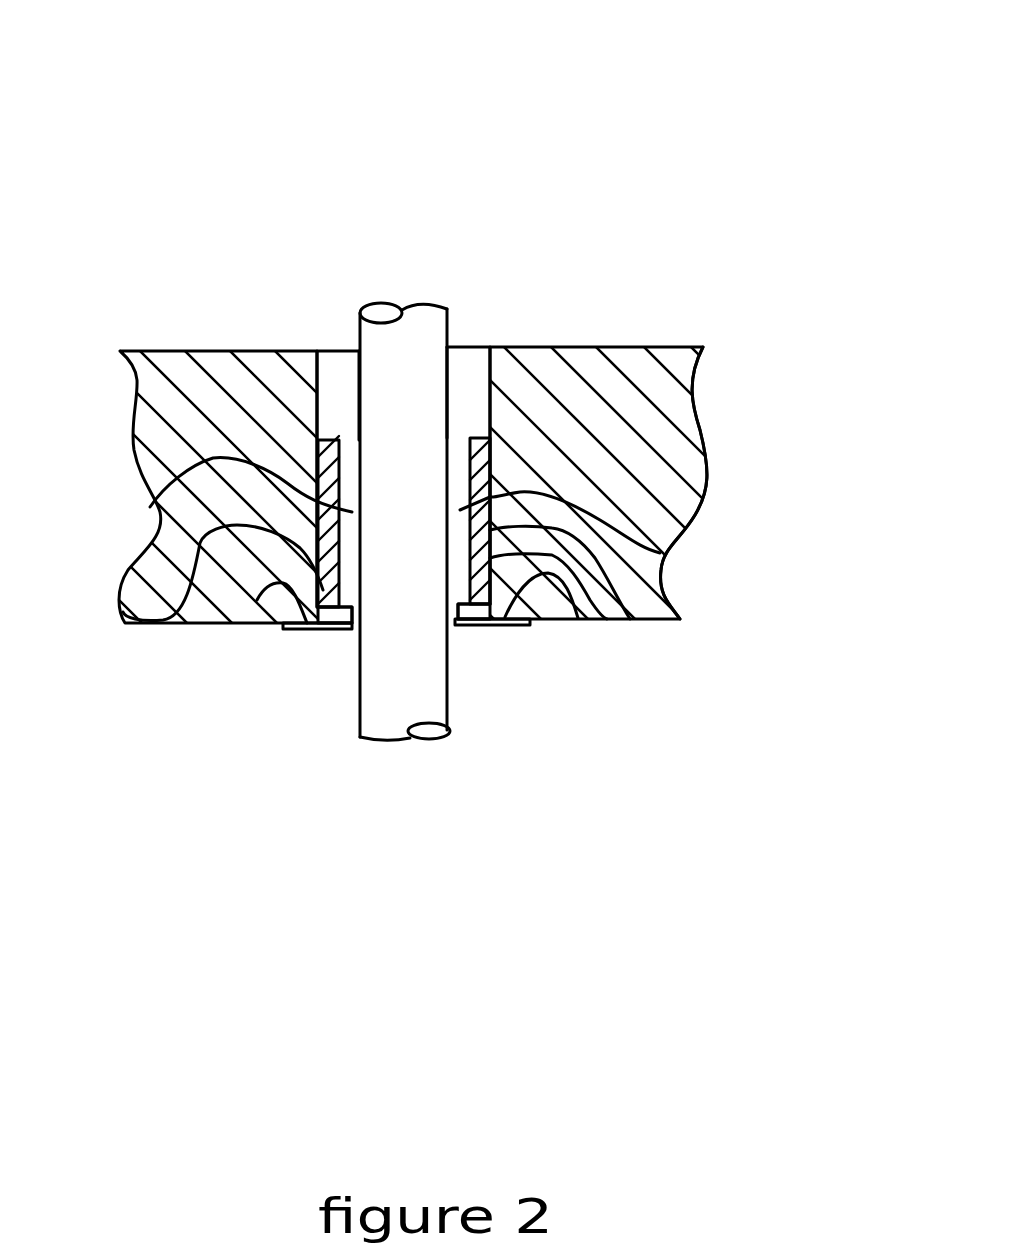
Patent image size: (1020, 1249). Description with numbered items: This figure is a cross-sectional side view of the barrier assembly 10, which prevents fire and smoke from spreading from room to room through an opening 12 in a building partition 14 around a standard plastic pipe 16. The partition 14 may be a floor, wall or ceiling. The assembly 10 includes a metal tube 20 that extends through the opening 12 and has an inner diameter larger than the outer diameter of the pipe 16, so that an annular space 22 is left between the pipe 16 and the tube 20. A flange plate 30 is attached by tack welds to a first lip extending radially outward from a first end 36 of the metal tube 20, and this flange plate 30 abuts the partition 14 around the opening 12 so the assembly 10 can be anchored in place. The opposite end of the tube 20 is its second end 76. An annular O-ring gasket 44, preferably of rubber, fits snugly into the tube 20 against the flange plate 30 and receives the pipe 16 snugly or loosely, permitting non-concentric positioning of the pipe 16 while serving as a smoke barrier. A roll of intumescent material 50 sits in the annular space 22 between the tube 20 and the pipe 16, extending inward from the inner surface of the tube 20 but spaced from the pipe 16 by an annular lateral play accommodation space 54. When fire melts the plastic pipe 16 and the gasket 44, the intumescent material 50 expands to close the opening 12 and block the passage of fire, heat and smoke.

The barrier assembly 10 is at (672, 152).
The opening 12 is at (338, 362).
The building partition 14 is at (172, 351).
The plastic pipe 16 is at (380, 694).
The metal tube 20 is at (490, 373).
The annular space 22 is at (477, 417).
The flange plate 30 is at (257, 600).
The first end 36 is at (607, 619).
The annular gasket 44 is at (343, 625).
The intumescent material 50 is at (123, 612).
The annular lateral play accommodation space 54 is at (150, 507).
The second end 76 is at (550, 393).